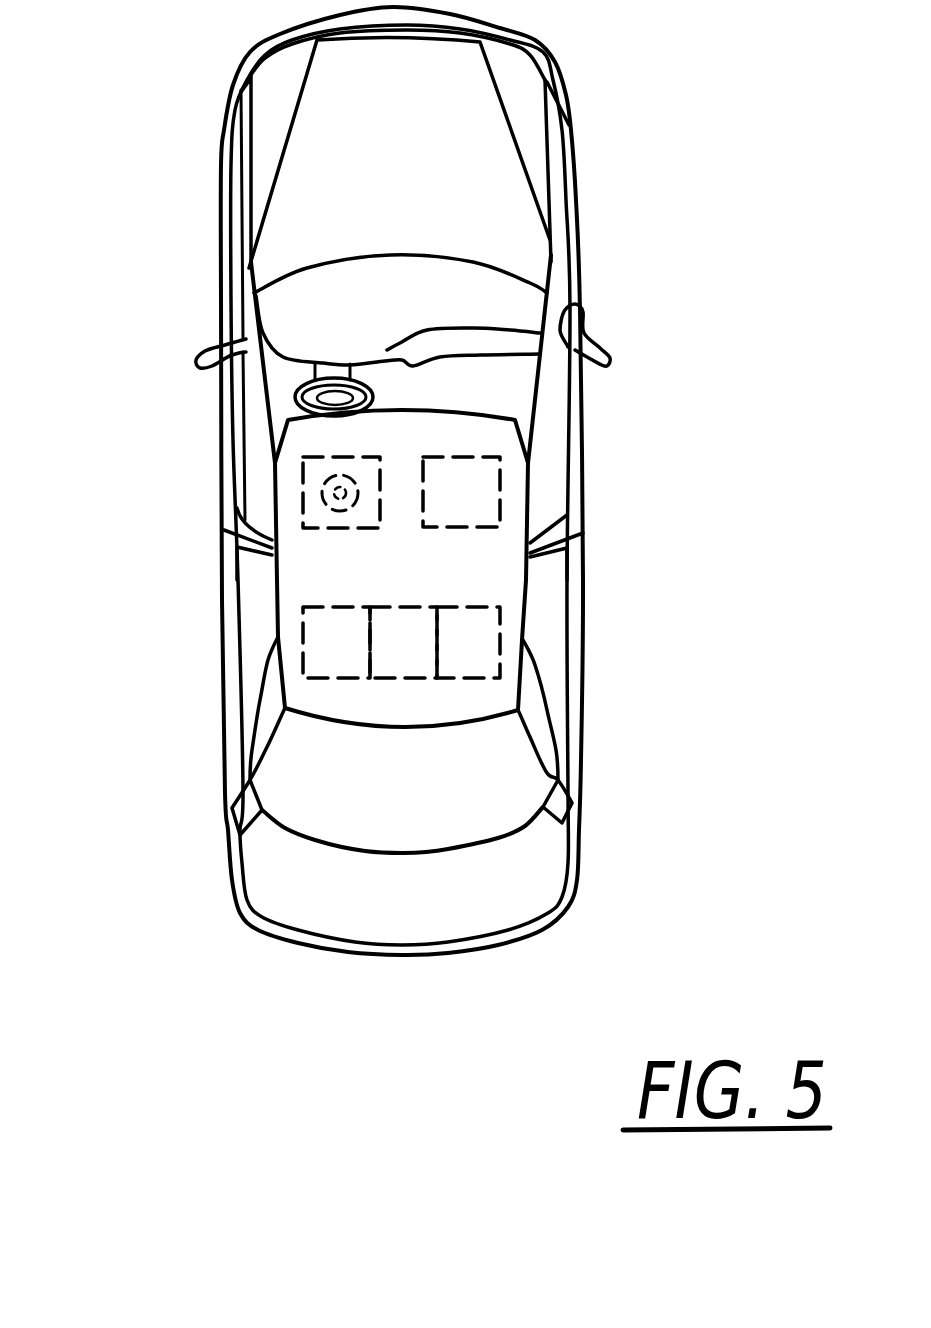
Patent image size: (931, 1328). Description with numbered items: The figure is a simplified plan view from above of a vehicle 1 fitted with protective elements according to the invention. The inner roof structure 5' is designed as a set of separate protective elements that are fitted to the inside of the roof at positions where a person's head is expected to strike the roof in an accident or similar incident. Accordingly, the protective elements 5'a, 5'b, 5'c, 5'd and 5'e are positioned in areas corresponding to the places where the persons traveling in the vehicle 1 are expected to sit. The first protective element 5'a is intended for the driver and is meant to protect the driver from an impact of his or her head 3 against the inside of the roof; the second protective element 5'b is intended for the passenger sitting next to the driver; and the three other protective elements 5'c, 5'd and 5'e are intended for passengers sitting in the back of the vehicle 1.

The vehicle 1 is at (297, 183).
The head 3 is at (325, 492).
The inner roof structure 5' is at (498, 628).
The first protective element 5'a is at (220, 492).
The second protective element 5'b is at (578, 473).
The protective element 5'c is at (216, 640).
The protective element 5'd is at (550, 619).
The protective element 5'e is at (583, 642).